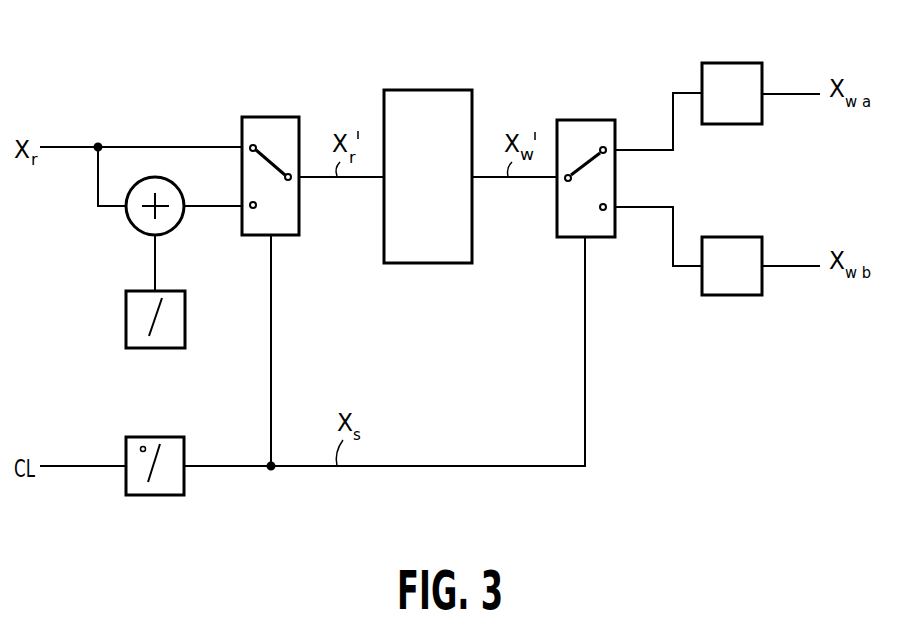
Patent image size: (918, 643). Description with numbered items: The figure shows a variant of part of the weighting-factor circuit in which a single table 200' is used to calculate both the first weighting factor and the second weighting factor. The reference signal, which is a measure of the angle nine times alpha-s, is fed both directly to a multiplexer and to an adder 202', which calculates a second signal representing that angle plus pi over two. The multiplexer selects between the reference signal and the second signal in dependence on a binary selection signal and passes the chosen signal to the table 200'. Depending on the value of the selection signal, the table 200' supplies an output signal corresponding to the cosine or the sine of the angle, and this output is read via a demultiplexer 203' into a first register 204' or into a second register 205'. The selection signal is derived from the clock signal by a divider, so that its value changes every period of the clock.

The table 200' is at (428, 150).
The adder 202' is at (131, 262).
The demultiplexer 203' is at (586, 153).
The first register 204' is at (732, 68).
The second register 205' is at (732, 241).